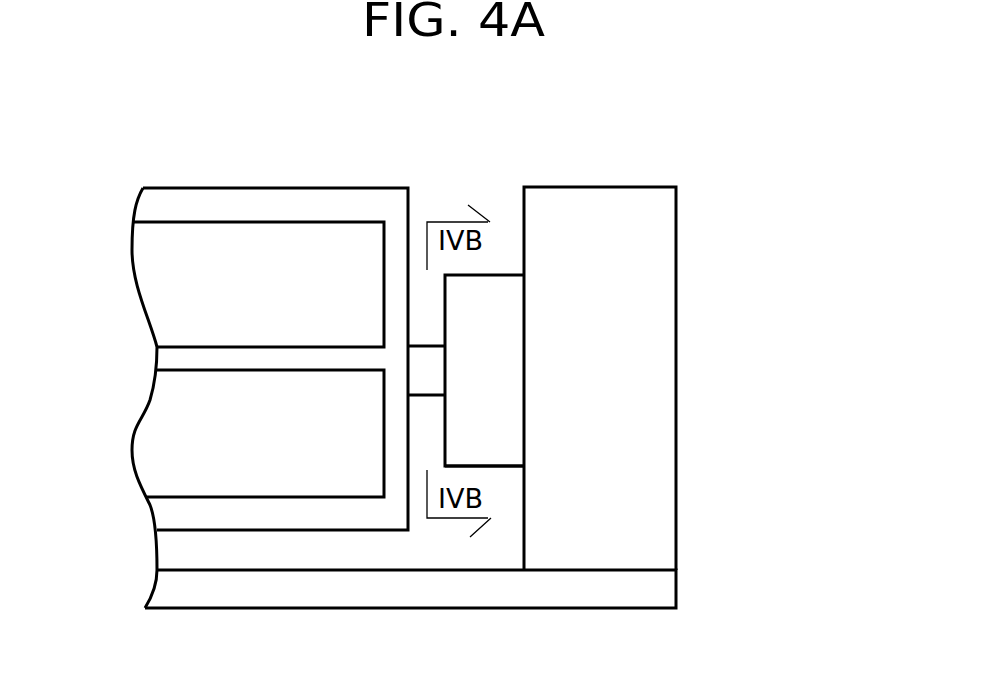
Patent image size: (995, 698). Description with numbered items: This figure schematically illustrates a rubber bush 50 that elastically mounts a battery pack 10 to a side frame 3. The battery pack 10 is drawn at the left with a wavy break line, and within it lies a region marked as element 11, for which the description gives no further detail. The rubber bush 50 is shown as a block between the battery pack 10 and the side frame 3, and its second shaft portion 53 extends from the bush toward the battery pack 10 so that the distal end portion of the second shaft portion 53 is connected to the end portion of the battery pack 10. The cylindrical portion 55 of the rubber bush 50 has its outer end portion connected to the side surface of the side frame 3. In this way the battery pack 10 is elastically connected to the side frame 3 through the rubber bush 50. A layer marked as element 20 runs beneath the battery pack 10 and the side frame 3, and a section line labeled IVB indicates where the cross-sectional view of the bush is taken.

The battery pack 10 is at (215, 202).
The inner region of component 10 11 is at (280, 260).
The second shaft portion 53 is at (424, 386).
The rubber bush 50 is at (520, 334).
The cylindrical portion 55 is at (486, 466).
The side frame 3 is at (596, 372).
The base layer 20 is at (425, 595).